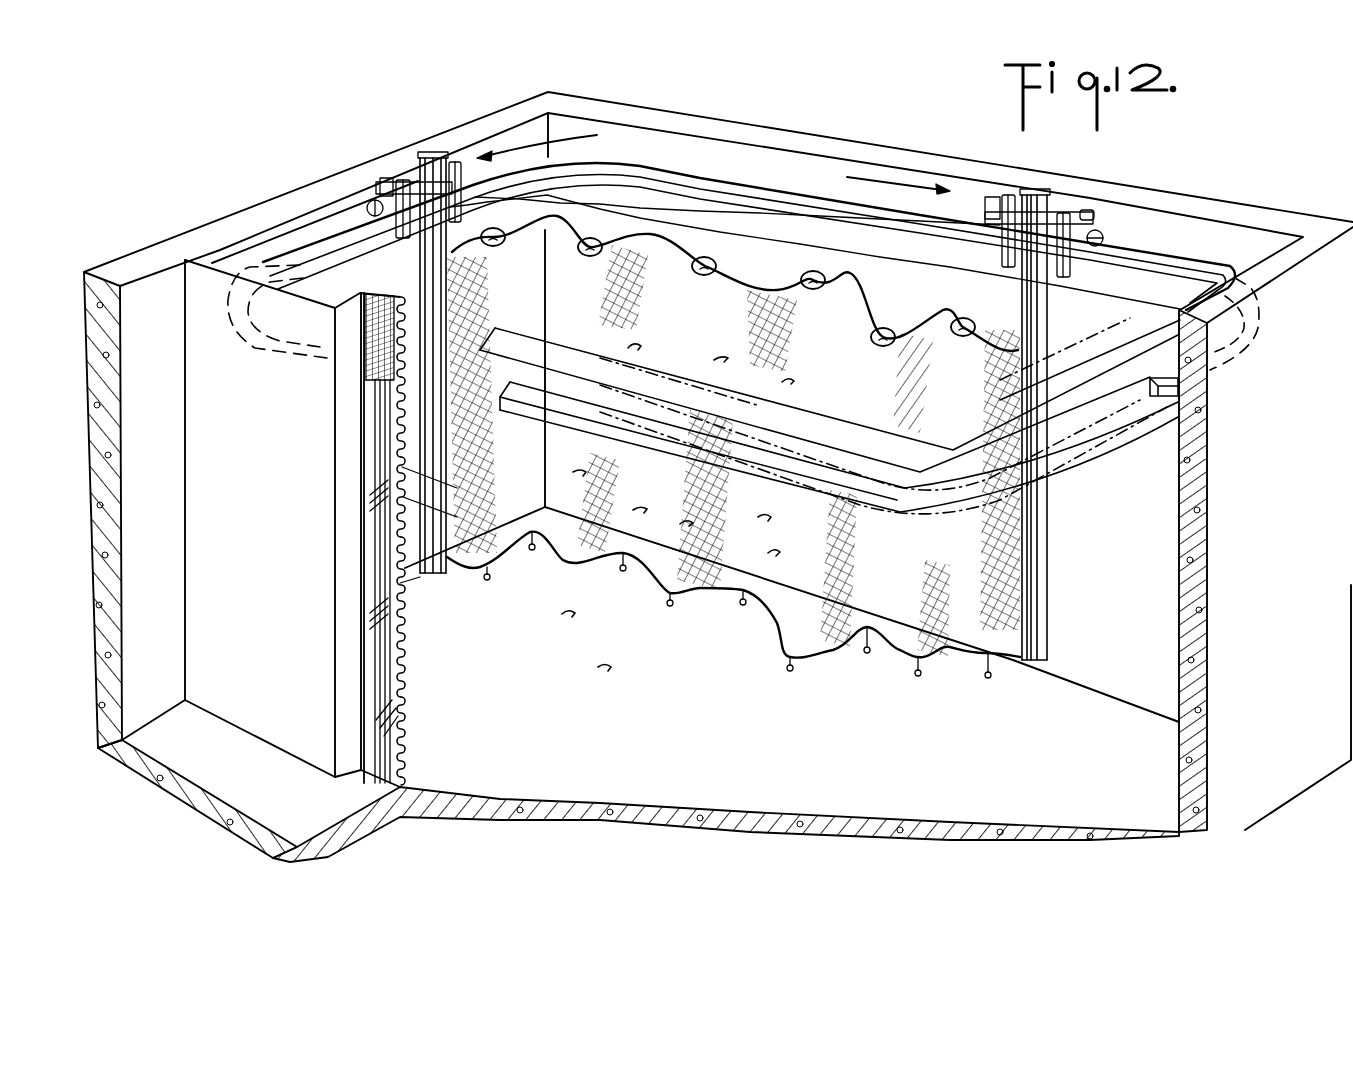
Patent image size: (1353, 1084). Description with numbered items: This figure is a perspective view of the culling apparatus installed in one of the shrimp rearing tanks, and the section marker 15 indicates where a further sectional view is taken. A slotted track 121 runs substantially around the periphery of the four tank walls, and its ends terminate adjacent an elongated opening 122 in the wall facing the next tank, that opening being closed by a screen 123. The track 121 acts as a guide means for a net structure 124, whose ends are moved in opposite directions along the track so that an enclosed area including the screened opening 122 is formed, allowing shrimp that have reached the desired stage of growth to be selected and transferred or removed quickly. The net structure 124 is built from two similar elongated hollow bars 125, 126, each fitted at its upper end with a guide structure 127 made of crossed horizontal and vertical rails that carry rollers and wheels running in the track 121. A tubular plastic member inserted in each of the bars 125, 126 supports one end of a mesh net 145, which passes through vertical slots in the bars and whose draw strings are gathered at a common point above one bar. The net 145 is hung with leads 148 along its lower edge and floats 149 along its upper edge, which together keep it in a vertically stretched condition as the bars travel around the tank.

The slotted track 121 is at (1106, 438).
The elongated opening 122 is at (390, 600).
The screen 123 is at (377, 292).
The net structure 124 is at (1044, 352).
The elongated hollow bar 125 is at (421, 164).
The elongated hollow bar 126 is at (1051, 191).
The guide structure 127 is at (463, 212).
The mesh net 145 is at (700, 597).
The leads 148 is at (868, 650).
The floats 149 is at (694, 271).
The section line 15 is at (1090, 148).